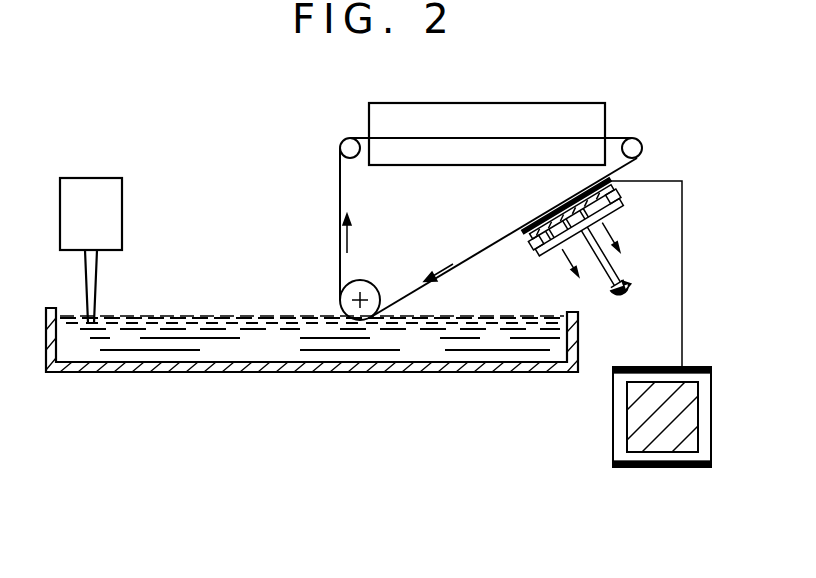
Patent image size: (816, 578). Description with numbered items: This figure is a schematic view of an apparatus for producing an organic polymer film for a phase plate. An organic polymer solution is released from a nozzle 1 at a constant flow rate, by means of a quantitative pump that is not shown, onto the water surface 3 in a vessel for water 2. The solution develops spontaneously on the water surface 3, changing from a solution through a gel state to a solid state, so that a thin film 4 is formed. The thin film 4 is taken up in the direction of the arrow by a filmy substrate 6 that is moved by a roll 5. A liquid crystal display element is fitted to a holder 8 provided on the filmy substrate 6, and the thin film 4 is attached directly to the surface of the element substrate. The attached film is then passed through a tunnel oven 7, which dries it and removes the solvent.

The nozzle 1 is at (97, 283).
The vessel for water 2 is at (186, 373).
The water surface 3 is at (123, 320).
The thin film 4 is at (238, 318).
The roll 5 is at (342, 142).
The filmy substrate 6 is at (340, 190).
The tunnel oven 7 is at (538, 103).
The holder 8 is at (663, 470).